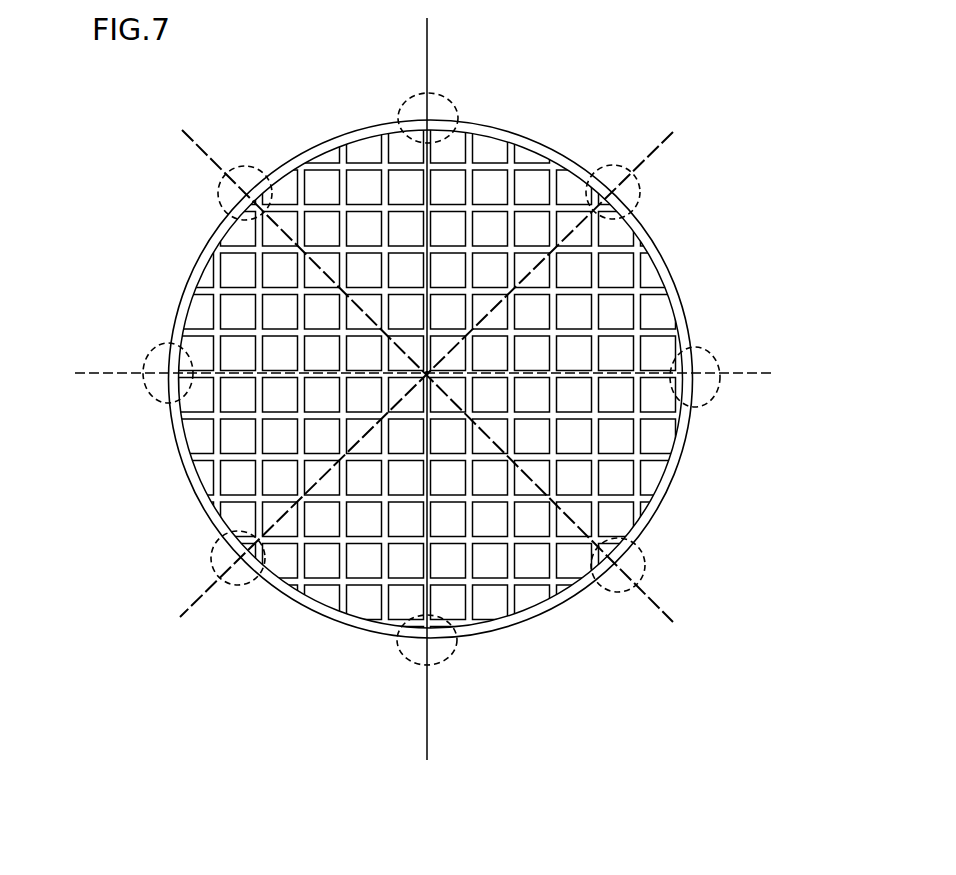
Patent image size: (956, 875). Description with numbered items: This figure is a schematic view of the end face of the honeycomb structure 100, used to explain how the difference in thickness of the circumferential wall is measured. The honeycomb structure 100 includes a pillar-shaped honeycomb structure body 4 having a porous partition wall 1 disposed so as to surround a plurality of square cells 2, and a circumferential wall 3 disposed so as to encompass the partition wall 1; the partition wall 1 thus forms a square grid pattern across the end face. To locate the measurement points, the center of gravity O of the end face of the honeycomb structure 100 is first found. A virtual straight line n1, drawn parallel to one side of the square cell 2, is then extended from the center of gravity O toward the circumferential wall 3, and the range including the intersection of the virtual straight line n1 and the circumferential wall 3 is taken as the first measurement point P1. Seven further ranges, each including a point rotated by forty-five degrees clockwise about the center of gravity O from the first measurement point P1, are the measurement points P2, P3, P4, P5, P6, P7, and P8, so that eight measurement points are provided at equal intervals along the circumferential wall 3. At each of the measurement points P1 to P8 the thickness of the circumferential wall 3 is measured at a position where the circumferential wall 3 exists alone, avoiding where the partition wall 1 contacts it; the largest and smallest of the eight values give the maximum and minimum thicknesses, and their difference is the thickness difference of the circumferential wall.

The honeycomb structure 100 is at (754, 89).
The partition wall 1 is at (528, 212).
The cell 2 is at (613, 275).
The circumferential wall 3 is at (672, 473).
The honeycomb structure body 4 is at (700, 290).
The virtual straight line n1 is at (427, 193).
The center of gravity O is at (378, 373).
The first measurement point P1 is at (442, 113).
The measurement point P2 is at (632, 200).
The measurement point P3 is at (700, 372).
The measurement point P4 is at (635, 567).
The measurement point P5 is at (440, 647).
The measurement point P6 is at (227, 562).
The measurement point P7 is at (160, 363).
The measurement point P8 is at (227, 200).